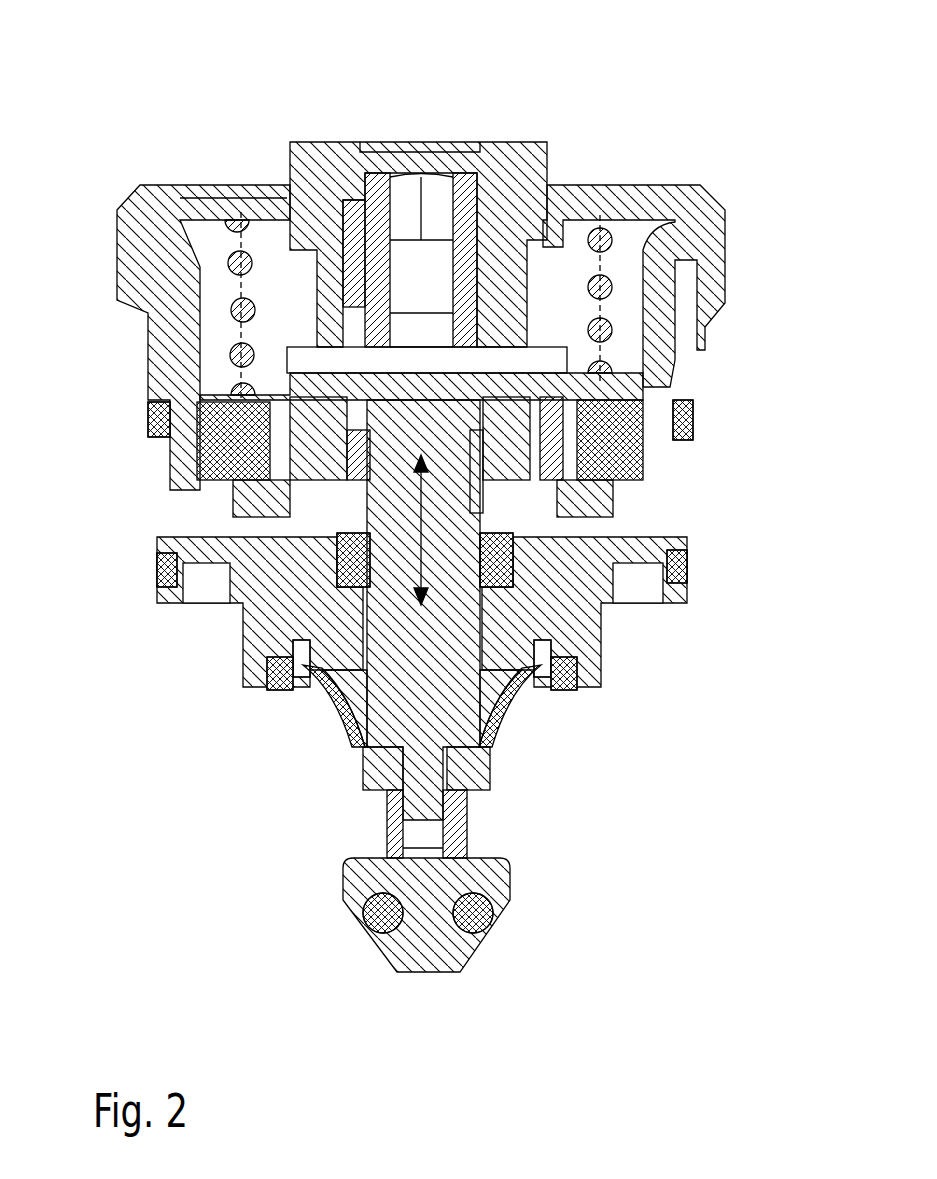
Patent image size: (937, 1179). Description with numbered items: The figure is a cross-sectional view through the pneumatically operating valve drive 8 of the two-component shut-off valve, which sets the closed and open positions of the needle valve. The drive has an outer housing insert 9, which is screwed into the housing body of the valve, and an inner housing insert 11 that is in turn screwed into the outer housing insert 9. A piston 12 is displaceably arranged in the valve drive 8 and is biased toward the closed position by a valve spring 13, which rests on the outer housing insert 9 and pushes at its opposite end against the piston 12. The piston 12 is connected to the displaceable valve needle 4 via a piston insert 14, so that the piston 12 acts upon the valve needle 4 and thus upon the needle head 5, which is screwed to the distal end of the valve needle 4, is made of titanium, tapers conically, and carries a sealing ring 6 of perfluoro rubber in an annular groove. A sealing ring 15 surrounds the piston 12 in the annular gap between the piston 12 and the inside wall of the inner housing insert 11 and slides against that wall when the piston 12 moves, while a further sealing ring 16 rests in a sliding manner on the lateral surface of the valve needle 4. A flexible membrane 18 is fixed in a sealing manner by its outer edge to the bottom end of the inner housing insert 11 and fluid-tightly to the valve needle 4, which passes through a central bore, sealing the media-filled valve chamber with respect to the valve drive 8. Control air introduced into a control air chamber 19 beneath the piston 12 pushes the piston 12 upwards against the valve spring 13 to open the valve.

The valve needle 4 is at (502, 610).
The needle head 5 is at (462, 951).
The sealing ring 6 is at (497, 935).
The valve drive 8 is at (412, 526).
The outer housing insert 9 is at (441, 212).
The inner housing insert 11 is at (160, 337).
The piston 12 is at (497, 292).
The valve spring 13 is at (465, 257).
The piston insert 14 is at (155, 482).
The sealing ring 15 is at (686, 447).
The further sealing ring 16 is at (539, 609).
The flexible membrane 18 is at (381, 736).
The control air chamber 19 is at (368, 621).